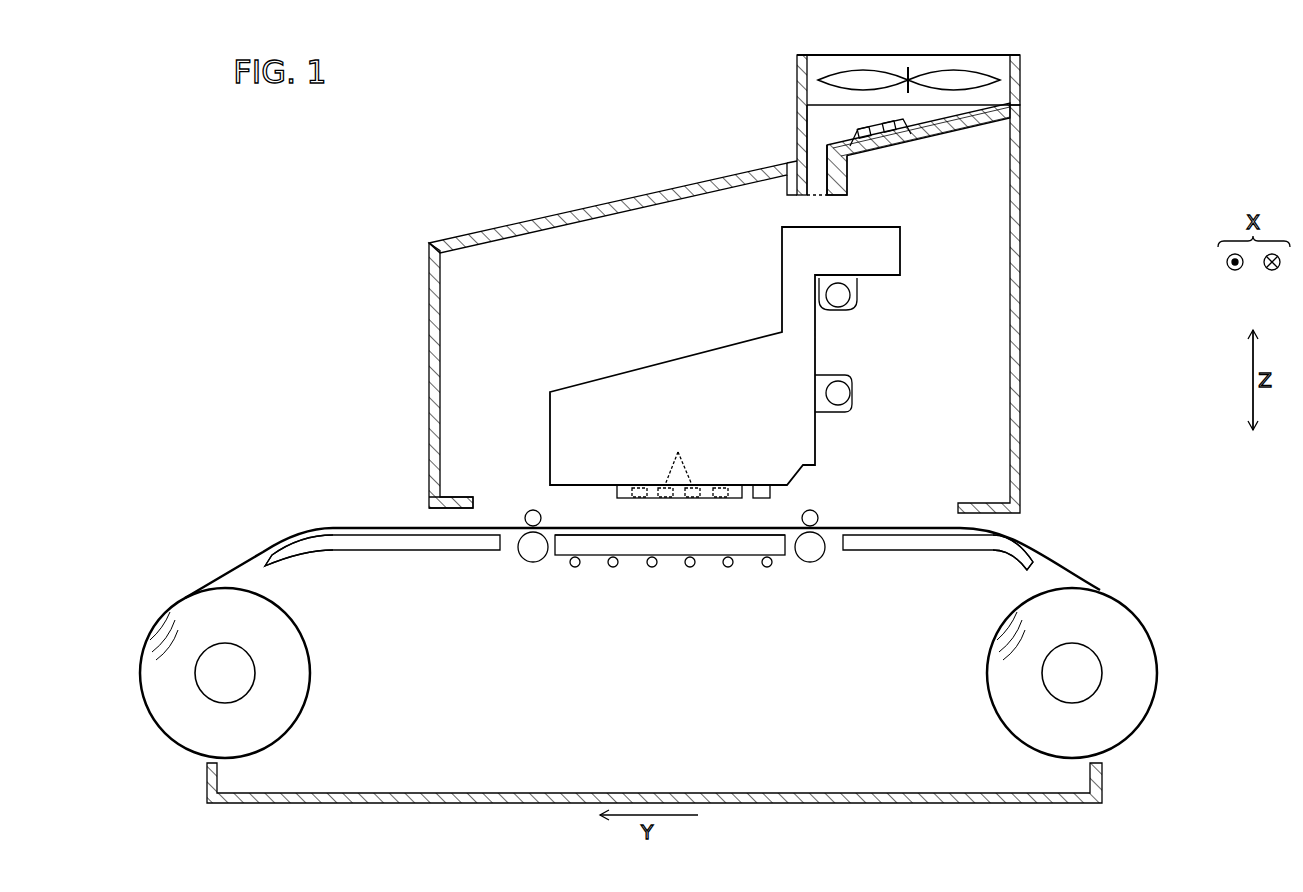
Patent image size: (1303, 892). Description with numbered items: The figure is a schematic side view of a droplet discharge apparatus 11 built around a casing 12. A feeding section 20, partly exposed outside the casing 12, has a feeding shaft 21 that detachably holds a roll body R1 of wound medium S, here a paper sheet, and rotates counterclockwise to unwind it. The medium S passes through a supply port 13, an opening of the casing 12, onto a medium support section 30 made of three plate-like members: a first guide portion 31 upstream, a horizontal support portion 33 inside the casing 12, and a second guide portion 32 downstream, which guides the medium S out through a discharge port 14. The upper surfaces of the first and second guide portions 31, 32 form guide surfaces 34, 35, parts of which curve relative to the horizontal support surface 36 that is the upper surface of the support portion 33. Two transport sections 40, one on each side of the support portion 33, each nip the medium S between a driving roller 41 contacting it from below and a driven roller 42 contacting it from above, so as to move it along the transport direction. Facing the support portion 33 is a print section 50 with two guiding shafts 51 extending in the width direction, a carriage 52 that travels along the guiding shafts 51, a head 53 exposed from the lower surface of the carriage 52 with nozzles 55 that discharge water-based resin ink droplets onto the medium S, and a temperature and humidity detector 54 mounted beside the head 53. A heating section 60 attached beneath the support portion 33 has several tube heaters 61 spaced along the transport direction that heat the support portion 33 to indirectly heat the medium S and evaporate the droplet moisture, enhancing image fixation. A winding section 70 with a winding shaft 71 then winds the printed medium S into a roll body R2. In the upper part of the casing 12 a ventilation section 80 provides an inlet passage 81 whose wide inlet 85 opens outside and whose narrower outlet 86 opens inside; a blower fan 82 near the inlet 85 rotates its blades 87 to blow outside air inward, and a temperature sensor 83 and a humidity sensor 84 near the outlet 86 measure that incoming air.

The droplet discharge apparatus 11 is at (693, 310).
The casing 12 is at (590, 207).
The supply port 13 is at (957, 516).
The discharge port 14 is at (432, 509).
The feeding section 20 is at (1106, 686).
The feeding shaft 21 is at (1055, 690).
The medium support section 30 is at (649, 613).
The first guide portion 31 is at (912, 551).
The second guide portion 32 is at (385, 551).
The support portion 33 is at (636, 560).
The guide surface 34 is at (991, 529).
The guide surface 35 is at (308, 534).
The support surface 36 is at (578, 531).
The transport section 40 is at (678, 535).
The driving roller 41 is at (535, 563).
The driven roller 42 is at (526, 527).
The print section 50 is at (725, 362).
The guiding shaft 51 is at (853, 297).
The carriage 52 is at (683, 346).
The head 53 is at (603, 488).
The temperature and humidity detector 54 is at (768, 487).
The nozzles 55 is at (678, 452).
The heating section 60 is at (671, 628).
The heaters 61 is at (692, 567).
The winding section 70 is at (239, 686).
The winding shaft 71 is at (208, 690).
The ventilation section 80 is at (889, 124).
The inlet passage 81 is at (812, 126).
The blower fan 82 is at (933, 67).
The temperature sensor 83 is at (902, 140).
The humidity sensor 84 is at (852, 161).
The inlet 85 is at (893, 55).
The outlet 86 is at (803, 200).
The blades 87 is at (985, 72).
The roll body R1 is at (1157, 630).
The roll body R2 is at (310, 672).
The medium S is at (232, 572).